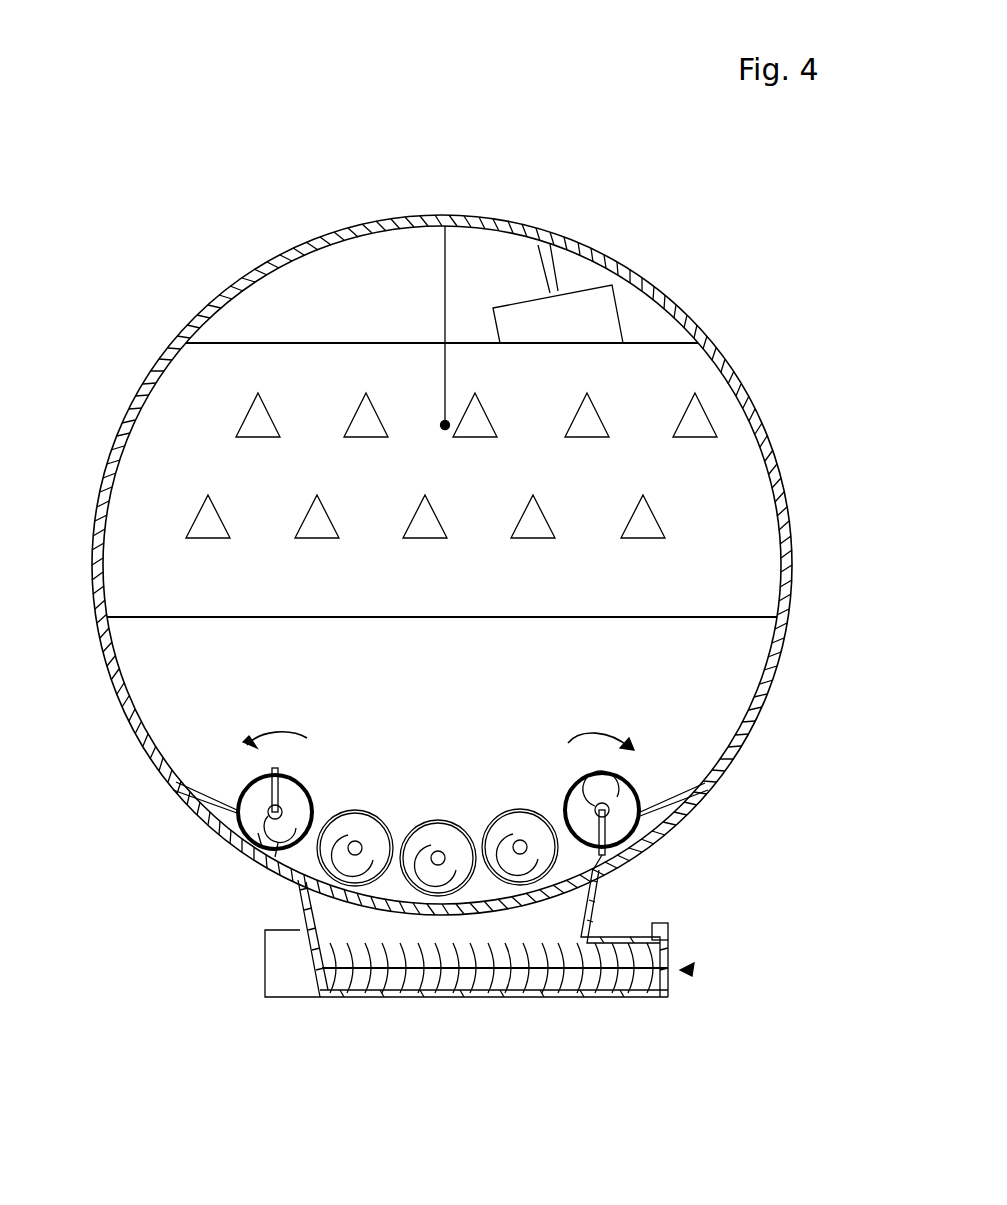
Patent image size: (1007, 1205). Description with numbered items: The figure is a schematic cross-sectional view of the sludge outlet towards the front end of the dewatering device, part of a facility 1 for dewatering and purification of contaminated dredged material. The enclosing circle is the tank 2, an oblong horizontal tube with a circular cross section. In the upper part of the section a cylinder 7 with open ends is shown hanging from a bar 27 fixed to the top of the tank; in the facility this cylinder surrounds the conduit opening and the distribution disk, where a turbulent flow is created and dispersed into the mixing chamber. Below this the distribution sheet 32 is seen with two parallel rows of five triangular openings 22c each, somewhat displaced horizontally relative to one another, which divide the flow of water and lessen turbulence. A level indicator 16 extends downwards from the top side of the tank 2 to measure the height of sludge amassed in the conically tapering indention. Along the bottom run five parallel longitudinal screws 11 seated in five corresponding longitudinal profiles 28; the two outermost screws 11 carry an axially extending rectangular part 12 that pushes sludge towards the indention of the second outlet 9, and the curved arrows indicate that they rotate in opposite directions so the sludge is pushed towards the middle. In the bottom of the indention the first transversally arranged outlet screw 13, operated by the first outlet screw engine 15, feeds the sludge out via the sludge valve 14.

The facility 1 is at (160, 93).
The tank 2 is at (793, 548).
The cylinder 7 is at (608, 323).
The second outlet 9 is at (694, 969).
The longitudinal screws 11 is at (259, 833).
The axially extending rectangular part 12 is at (273, 768).
The first transversally arranged outlet screw 13 is at (520, 978).
The sludge valve 14 is at (668, 930).
The first outlet screw engine 15 is at (297, 985).
The level indicator 16 is at (440, 420).
The triangular openings 22c is at (350, 415).
The bar 27 is at (553, 270).
The longitudinal profiles 28 is at (280, 850).
The distribution sheet 32 is at (743, 510).